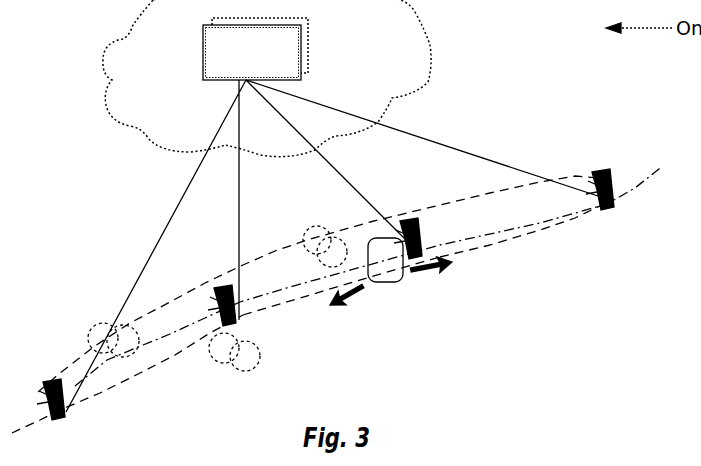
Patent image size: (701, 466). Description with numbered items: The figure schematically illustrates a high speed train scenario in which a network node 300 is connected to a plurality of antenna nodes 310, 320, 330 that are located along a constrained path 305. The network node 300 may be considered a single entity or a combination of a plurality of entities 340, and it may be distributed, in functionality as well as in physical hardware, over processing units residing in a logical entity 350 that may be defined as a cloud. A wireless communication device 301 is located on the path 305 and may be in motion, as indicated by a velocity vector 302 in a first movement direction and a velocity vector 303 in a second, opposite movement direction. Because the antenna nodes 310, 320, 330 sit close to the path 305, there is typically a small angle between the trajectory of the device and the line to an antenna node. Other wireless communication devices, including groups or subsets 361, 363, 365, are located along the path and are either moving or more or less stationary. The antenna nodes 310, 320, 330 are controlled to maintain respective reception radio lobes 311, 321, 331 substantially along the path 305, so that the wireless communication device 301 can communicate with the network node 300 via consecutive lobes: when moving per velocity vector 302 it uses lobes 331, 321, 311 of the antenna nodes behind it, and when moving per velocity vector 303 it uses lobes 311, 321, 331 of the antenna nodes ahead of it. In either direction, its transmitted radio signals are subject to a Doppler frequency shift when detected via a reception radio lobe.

The network node 300 is at (203, 61).
The plurality of entities 340 is at (308, 48).
The logical entity 350 is at (432, 64).
The antenna node 330 is at (592, 176).
The constrained path 305 is at (632, 194).
The group of wireless communication devices 361 is at (318, 232).
The antenna node 320 is at (408, 224).
The antenna node 310 is at (222, 296).
The group of wireless communication devices 363 is at (104, 322).
The reception radio lobe 331 is at (540, 227).
The wireless communication device 301 is at (392, 286).
The velocity vector 303 is at (444, 272).
The reception radio lobe 321 is at (295, 306).
The velocity vector 302 is at (354, 308).
The group of wireless communication devices 365 is at (246, 375).
The reception radio lobe 311 is at (105, 400).